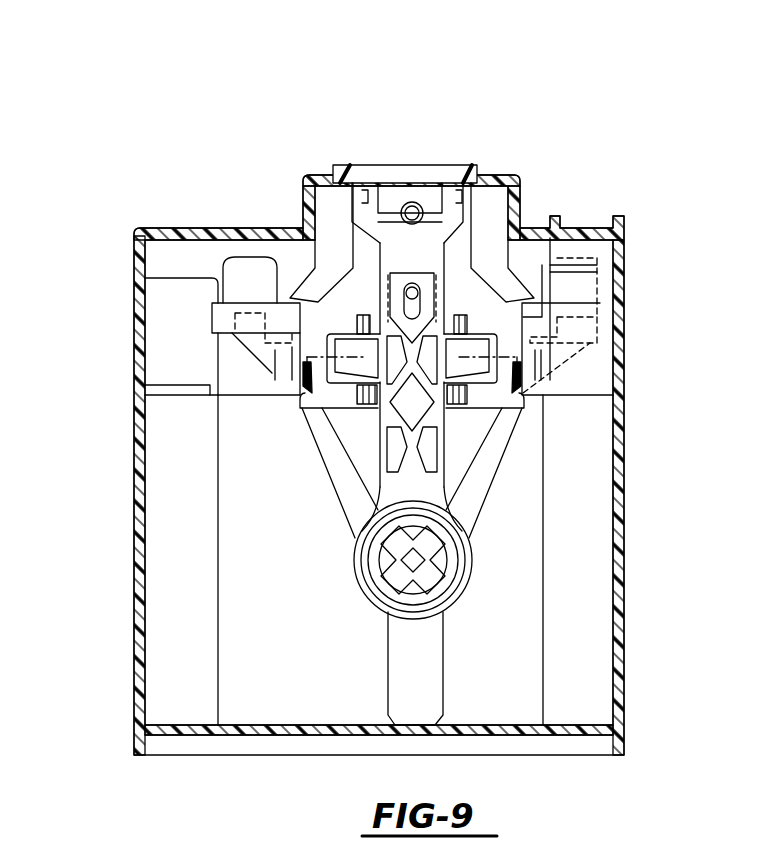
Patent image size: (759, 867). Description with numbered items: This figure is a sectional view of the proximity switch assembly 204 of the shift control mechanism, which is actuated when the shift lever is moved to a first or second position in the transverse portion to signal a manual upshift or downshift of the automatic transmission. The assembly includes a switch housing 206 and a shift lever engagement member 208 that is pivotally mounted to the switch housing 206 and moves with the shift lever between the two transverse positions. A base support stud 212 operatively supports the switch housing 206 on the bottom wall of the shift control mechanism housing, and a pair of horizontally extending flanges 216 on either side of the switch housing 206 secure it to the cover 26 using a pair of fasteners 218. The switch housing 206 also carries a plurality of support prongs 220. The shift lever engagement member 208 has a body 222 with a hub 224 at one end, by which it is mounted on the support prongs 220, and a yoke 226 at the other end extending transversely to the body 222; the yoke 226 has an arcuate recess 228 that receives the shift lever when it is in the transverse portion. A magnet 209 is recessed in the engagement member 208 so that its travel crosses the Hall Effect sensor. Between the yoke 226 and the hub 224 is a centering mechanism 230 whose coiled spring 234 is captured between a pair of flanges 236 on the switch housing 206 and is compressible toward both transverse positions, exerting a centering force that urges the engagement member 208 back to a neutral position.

The proximity switch assembly 204 is at (379, 391).
The cover 26 is at (227, 228).
The fasteners 218 is at (232, 278).
The horizontally extending flanges 216 is at (218, 320).
The flanges 236 is at (480, 323).
The yoke 226 is at (452, 162).
The arcuate recess 228 is at (395, 172).
The magnet 209 is at (437, 290).
The coiled spring 234 is at (445, 330).
The centering mechanism 230 is at (337, 392).
The shift lever engagement member 208 is at (368, 432).
The switch housing 206 is at (308, 473).
The body 222 is at (438, 418).
The support prongs 220 is at (436, 536).
The hub 224 is at (352, 537).
The base support stud 212 is at (430, 670).